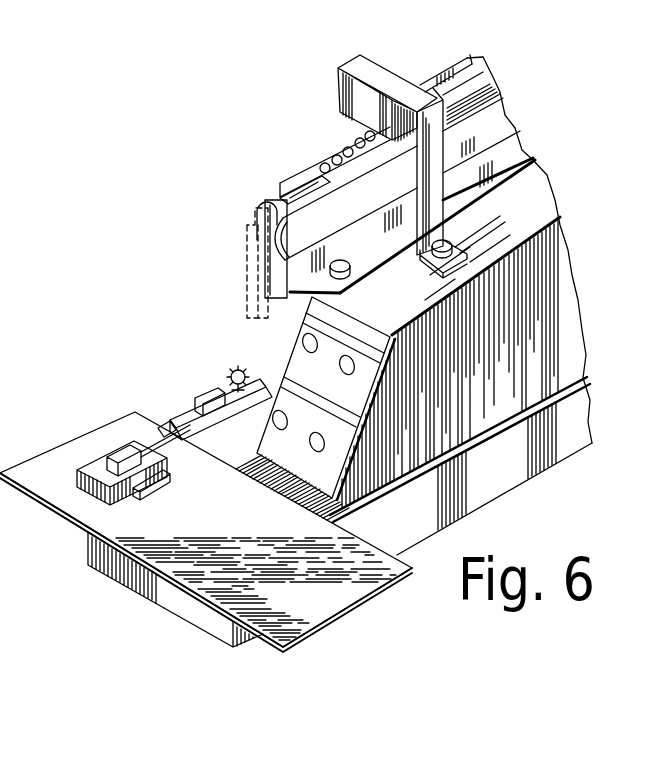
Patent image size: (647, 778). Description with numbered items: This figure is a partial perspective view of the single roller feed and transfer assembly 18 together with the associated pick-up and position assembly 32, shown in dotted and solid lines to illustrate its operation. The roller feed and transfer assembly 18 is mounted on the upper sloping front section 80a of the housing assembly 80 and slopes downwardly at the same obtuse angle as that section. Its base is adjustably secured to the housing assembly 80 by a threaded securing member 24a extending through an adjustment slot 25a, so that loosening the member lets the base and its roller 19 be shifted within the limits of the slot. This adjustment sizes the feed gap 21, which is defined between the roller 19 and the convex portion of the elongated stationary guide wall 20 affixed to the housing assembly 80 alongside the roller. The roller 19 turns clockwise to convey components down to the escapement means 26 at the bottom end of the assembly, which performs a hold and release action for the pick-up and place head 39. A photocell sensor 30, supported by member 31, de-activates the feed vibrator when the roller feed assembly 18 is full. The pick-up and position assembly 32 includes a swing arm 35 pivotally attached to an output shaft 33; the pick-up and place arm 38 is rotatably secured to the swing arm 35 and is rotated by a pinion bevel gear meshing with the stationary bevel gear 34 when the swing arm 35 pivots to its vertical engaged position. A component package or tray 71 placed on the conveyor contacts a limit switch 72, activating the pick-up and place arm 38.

The single roller feed and transfer assembly 18 is at (304, 174).
The roller 19 is at (480, 92).
The elongated stationary guide wall 20 is at (450, 66).
The feed gap 21 is at (475, 56).
The threaded securing member 24a is at (352, 268).
The adjustment slot 25a is at (345, 292).
The escapement means 26 is at (328, 187).
The photocell sensor 30 is at (340, 96).
The member 31 is at (437, 183).
The pick-up and position assembly 32 is at (187, 409).
The output shaft 33 is at (326, 398).
The stationary bevel gear 34 is at (233, 371).
The swing arm 35 is at (281, 487).
The pick-up and place arm 38 is at (158, 428).
The pick-up and place head 39 is at (117, 445).
The component package or tray 71 is at (170, 470).
The limit switch 72 is at (162, 490).
The housing assembly 80 is at (573, 310).
The upper sloping front section 80a is at (560, 197).